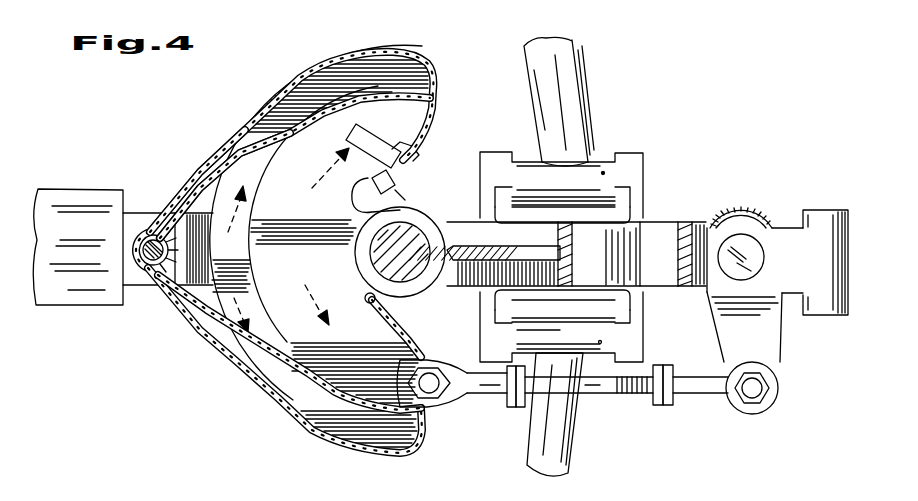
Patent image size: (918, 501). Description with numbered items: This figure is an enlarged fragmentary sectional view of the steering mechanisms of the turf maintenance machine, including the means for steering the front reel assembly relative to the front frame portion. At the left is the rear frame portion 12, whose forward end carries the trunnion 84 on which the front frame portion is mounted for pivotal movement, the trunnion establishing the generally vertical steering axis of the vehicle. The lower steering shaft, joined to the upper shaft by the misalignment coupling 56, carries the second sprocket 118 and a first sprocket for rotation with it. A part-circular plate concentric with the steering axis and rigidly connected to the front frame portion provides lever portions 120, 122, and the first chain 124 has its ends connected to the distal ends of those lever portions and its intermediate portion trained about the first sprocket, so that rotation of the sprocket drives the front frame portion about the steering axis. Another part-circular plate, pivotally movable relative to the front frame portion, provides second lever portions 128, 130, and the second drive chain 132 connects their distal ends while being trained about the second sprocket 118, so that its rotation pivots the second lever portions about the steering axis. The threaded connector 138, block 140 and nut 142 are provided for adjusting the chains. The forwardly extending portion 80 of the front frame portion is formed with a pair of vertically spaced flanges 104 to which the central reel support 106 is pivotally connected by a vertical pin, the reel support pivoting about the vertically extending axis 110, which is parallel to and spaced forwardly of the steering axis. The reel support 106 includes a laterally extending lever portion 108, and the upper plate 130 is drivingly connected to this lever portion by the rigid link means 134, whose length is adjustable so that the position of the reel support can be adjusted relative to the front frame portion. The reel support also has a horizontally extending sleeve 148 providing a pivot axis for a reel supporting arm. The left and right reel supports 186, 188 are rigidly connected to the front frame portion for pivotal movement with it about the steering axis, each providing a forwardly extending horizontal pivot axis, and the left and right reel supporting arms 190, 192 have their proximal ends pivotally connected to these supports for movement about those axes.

The rear frame portion 12 is at (82, 205).
The misalignment coupling 56 is at (153, 228).
The second sprocket 118 is at (176, 215).
The lever portion 120 is at (390, 56).
The lever portion 122 is at (362, 432).
The first chain 124 is at (228, 148).
The second lever portion 128 is at (400, 110).
The second lever portion 130 is at (323, 378).
The second drive chain 132 is at (263, 150).
The rigid link means 134 is at (647, 427).
The threaded connector 138 is at (410, 164).
The block 140 is at (368, 145).
The nut 142 is at (392, 188).
The trunnion 84 is at (412, 242).
The forwardly extending portion 80 is at (652, 222).
The flanges 104 is at (705, 222).
The central reel support 106 is at (787, 243).
The lever portion 108 is at (773, 340).
The vertically extending axis 110 is at (744, 252).
The sleeve 148 is at (822, 218).
The left reel support 186 is at (644, 144).
The right reel support 188 is at (592, 362).
The left reel supporting arm 190 is at (567, 103).
The right reel supporting arm 192 is at (540, 447).